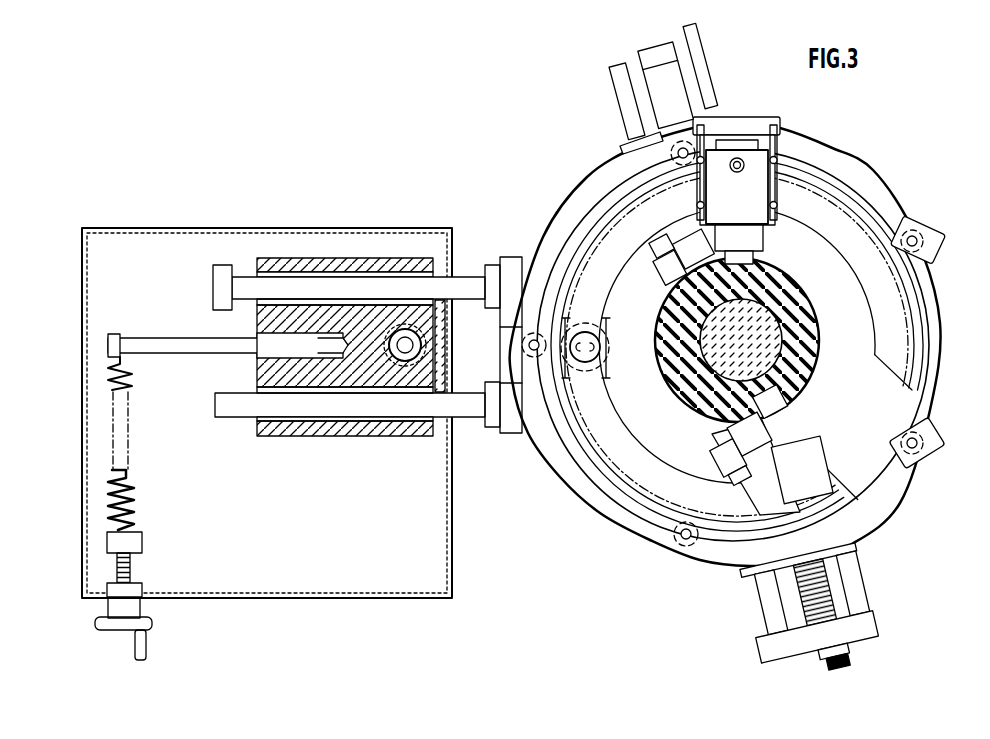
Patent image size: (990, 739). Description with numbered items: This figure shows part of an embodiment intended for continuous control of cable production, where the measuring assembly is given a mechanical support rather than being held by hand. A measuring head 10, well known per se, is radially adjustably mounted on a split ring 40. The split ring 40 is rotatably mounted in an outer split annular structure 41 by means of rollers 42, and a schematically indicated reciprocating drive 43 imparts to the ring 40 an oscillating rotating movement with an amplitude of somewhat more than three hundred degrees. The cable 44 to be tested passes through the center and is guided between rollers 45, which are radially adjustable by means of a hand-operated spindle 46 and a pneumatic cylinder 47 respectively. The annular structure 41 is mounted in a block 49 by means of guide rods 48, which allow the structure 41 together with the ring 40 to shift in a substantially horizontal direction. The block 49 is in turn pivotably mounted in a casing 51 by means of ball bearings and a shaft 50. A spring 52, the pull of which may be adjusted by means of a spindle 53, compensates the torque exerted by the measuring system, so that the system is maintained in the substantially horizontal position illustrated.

The measuring head 10 is at (752, 200).
The split ring 40 is at (888, 313).
The outer split annular structure 41 is at (856, 160).
The rollers 42 is at (622, 150).
The reciprocating drive 43 is at (619, 376).
The cable 44 is at (818, 338).
The rollers 45 is at (682, 262).
The hand-operated spindle 46 is at (818, 588).
The pneumatic cylinder 47 is at (676, 92).
The guide rods 48 is at (238, 272).
The block 49 is at (282, 372).
The shaft 50 is at (424, 352).
The casing 51 is at (82, 358).
The spring 52 is at (138, 504).
The spindle 53 is at (143, 566).